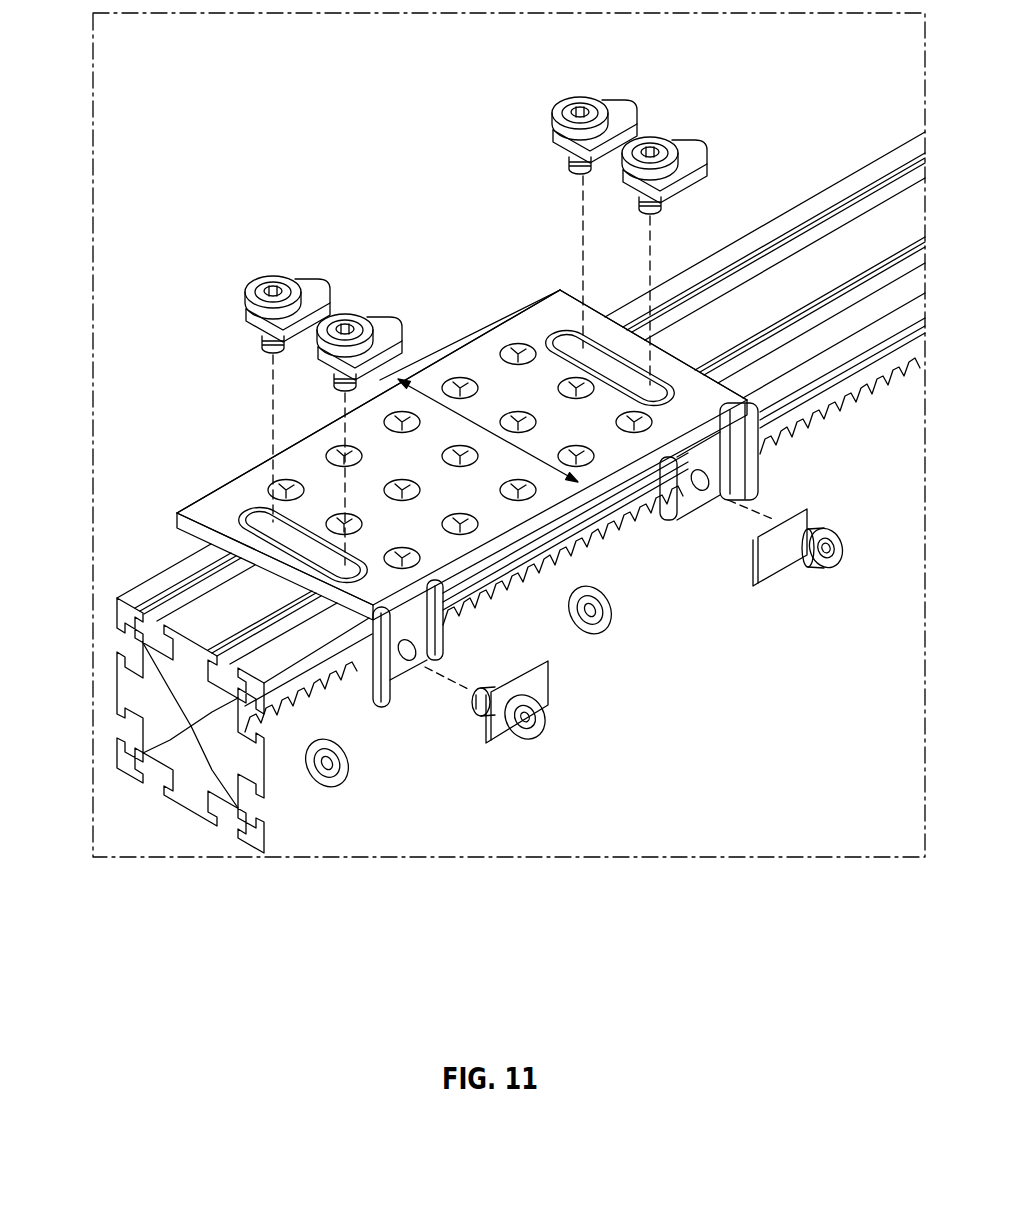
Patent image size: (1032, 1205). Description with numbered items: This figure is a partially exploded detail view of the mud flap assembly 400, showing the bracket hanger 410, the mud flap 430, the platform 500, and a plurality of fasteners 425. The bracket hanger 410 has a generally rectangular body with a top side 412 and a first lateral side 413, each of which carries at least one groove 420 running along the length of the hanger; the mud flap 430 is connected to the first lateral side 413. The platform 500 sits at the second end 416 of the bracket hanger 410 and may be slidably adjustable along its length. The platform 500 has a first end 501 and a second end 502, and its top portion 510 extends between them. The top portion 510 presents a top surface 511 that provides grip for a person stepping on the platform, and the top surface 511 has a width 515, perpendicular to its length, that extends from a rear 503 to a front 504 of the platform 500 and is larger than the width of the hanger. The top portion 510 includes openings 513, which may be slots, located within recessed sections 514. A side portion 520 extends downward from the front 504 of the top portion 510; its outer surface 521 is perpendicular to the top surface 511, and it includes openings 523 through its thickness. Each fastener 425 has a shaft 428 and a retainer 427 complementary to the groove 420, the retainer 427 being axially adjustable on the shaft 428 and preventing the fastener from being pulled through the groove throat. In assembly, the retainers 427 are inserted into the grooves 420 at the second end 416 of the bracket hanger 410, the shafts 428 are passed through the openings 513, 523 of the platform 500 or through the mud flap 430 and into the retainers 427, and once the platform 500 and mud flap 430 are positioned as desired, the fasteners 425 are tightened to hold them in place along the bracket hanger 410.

The mud flap assembly 400 is at (246, 212).
The bracket hanger 410 is at (884, 214).
The top side 412 is at (182, 620).
The first lateral side 413 is at (270, 778).
The second end 416 is at (122, 803).
The grooves 420 is at (173, 679).
The fasteners 425 is at (358, 318).
The retainer 427 is at (548, 678).
The shaft 428 is at (484, 712).
The mud flap 430 is at (745, 798).
The platform 500 is at (560, 297).
The first end 501 is at (680, 360).
The second end 502 is at (372, 695).
The rear 503 is at (452, 362).
The front 504 is at (533, 572).
The top portion 510 is at (205, 508).
The top surface 511 is at (497, 340).
The openings 513 is at (303, 538).
The recessed sections 514 is at (247, 503).
The width 515 is at (489, 432).
The side portion 520 is at (712, 443).
The outer surface 521 is at (716, 432).
The openings 523 is at (425, 650).